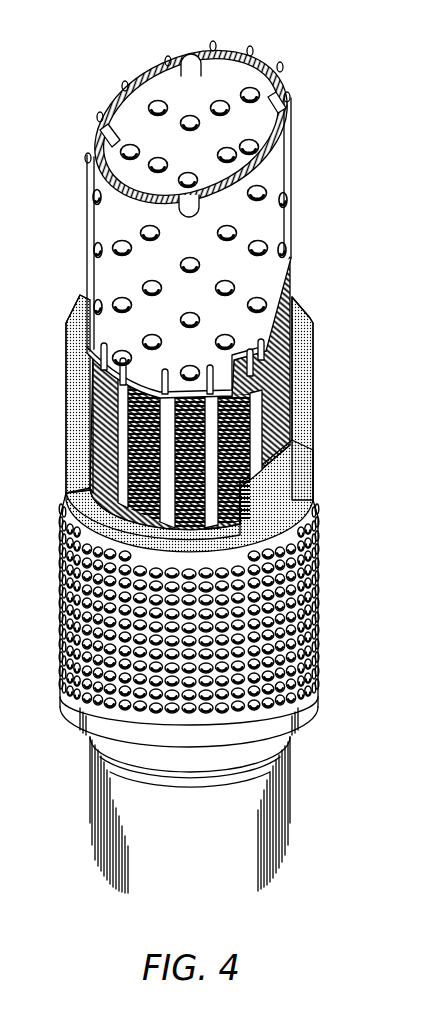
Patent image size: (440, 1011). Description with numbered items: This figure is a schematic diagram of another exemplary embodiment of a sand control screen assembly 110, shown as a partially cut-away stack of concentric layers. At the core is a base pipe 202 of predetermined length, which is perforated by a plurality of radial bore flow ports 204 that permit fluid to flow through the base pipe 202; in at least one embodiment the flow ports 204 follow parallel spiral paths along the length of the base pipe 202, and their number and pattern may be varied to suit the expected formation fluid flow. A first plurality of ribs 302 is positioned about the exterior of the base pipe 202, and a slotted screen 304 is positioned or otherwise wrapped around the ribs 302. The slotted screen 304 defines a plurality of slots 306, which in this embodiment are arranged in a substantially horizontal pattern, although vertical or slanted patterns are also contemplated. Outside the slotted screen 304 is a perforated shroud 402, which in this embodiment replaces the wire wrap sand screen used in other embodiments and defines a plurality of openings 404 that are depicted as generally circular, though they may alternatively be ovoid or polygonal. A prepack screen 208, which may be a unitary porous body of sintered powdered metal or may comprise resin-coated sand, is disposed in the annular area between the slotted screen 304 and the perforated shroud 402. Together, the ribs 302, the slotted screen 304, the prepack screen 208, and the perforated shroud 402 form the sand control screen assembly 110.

The sand control screen assembly 110 is at (81, 103).
The base pipe 202 is at (267, 64).
The flow ports 204 is at (157, 102).
The prepack screen 208 is at (301, 370).
The ribs 302 is at (88, 190).
The slotted screen 304 is at (256, 415).
The slots 306 is at (96, 411).
The perforated shroud 402 is at (321, 676).
The openings 404 is at (319, 603).